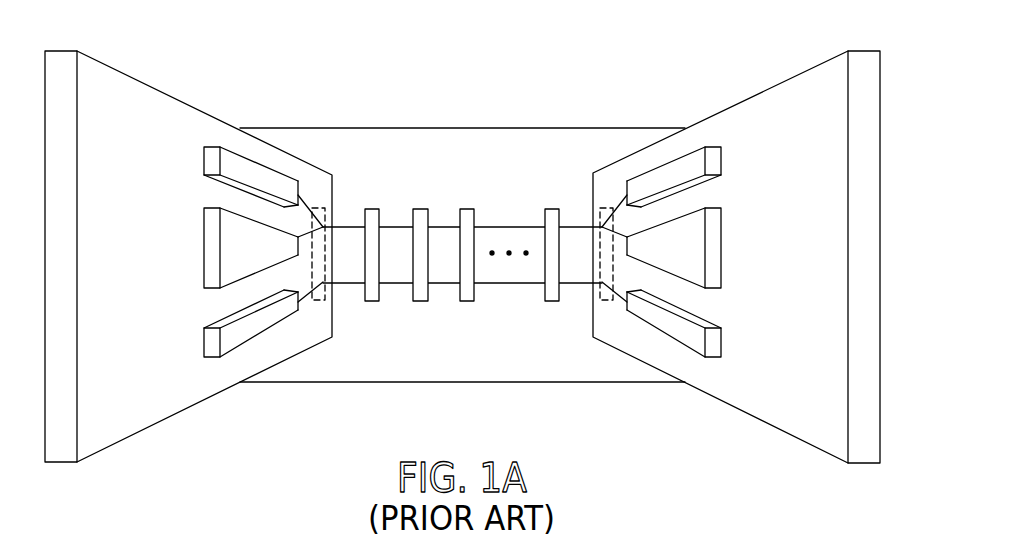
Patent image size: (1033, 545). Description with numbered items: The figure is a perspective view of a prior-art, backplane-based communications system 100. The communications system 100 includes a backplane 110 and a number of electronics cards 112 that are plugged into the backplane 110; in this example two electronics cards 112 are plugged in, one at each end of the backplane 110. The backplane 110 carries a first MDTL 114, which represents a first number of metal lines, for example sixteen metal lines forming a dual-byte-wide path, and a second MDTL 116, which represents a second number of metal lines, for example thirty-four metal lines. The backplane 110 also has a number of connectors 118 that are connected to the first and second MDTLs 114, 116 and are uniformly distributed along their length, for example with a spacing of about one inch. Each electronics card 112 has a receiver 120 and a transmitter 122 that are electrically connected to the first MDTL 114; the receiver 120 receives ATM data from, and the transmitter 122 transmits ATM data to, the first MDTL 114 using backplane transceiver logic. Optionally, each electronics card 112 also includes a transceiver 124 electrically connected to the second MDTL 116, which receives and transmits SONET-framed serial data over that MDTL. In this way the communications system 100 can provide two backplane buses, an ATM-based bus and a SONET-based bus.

The backplane-based communications system 100 is at (630, 54).
The backplane 110 is at (505, 141).
The electronics card 112 is at (133, 423).
The first MDTL 114 is at (349, 225).
The second MDTL 116 is at (353, 285).
The connector 118 is at (321, 299).
The receiver 120 is at (203, 158).
The transmitter 122 is at (203, 250).
The transceiver 124 is at (203, 347).